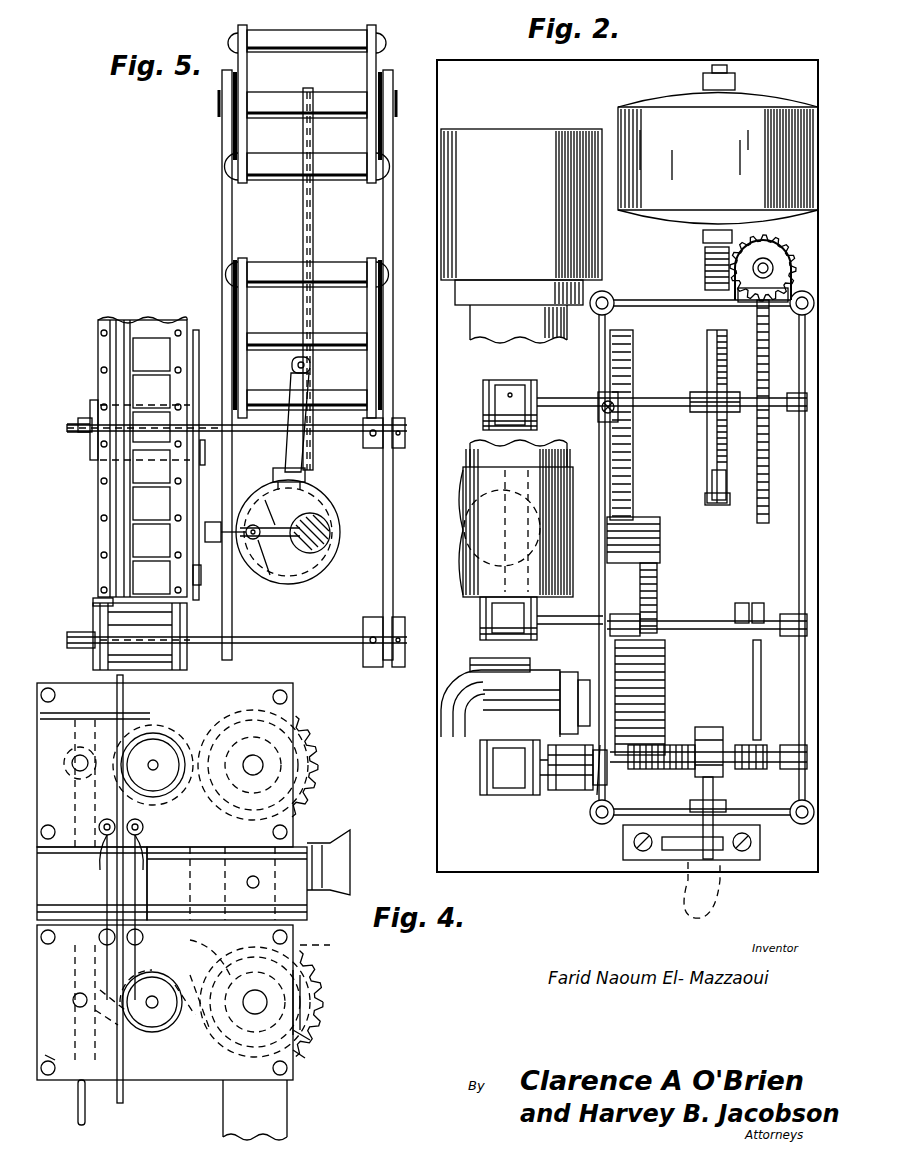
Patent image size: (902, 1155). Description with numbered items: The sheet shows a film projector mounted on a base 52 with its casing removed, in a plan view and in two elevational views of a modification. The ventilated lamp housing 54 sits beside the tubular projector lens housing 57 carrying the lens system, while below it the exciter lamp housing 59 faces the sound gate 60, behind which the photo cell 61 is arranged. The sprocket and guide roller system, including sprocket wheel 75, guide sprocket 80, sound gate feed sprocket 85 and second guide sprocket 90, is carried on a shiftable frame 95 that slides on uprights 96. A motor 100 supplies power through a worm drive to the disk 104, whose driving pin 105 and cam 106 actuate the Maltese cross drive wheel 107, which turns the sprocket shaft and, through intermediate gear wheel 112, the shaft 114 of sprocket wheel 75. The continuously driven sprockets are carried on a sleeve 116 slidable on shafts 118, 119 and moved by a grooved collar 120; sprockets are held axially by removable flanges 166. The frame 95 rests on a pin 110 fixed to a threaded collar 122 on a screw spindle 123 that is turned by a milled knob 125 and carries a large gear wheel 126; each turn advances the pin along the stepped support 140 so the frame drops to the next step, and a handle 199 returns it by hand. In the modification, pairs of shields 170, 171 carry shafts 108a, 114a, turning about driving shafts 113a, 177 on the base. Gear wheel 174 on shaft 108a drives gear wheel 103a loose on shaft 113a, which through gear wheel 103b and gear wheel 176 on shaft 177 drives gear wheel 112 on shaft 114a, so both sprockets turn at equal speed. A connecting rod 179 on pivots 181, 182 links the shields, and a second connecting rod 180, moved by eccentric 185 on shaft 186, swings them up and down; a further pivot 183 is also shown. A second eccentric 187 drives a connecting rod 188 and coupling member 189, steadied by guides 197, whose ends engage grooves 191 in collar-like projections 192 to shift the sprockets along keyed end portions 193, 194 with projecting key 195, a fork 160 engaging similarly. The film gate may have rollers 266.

In FIG. 2, the base 52 is at (507, 865).
In FIG. 2, the lamp housing 54 is at (516, 130).
In FIG. 4, the projector lens housing 57 is at (308, 845).
In FIG. 2, the exciter lamp housing 59 is at (463, 532).
In FIG. 2, the sound gate 60 is at (478, 662).
In FIG. 2, the photo cell 61 is at (451, 737).
In FIG. 2, the sprocket wheel 75 is at (526, 378).
In FIG. 4, the sprocket wheel 75 is at (128, 772).
In FIG. 4, the guide sprocket 80 is at (160, 1035).
In FIG. 5, the sound gate feed sprocket 85 is at (188, 400).
In FIG. 5, the second guide sprocket 90 is at (94, 612).
In FIG. 2, the shiftable frame 95 is at (698, 307).
In FIG. 2, the uprights 96 is at (611, 296).
In FIG. 2, the motor 100 is at (658, 115).
In FIG. 4, the gear wheel 103a is at (318, 988).
In FIG. 4, the gear 103b is at (325, 1010).
In FIG. 4, the disk 104 is at (310, 1046).
In FIG. 2, the driving pin 105 is at (713, 504).
In FIG. 4, the driving pin 105 is at (332, 952).
In FIG. 2, the cam 106 is at (712, 484).
In FIG. 4, the cam 106 is at (318, 1022).
In FIG. 2, the Maltese cross drive wheel 107 is at (707, 442).
In FIG. 4, the Maltese cross drive wheel 107 is at (220, 946).
In FIG. 4, the shaft 108a is at (120, 1040).
In FIG. 2, the pin 110 is at (725, 862).
In FIG. 4, the gear wheel 112 is at (115, 716).
In FIG. 4, the driving shaft 113a is at (255, 1002).
In FIG. 2, the shaft 114 is at (553, 408).
In FIG. 4, the shaft 114a is at (153, 760).
In FIG. 2, the sleeve 116 is at (712, 621).
In FIG. 2, the shaft 118 is at (556, 626).
In FIG. 5, the shaft 118 is at (70, 449).
In FIG. 5, the shaft 119 is at (68, 638).
In FIG. 2, the grooved collar 120 is at (745, 603).
In FIG. 2, the threaded collar 122 is at (715, 727).
In FIG. 2, the screw spindle 123 is at (696, 751).
In FIG. 2, the milled knob 125 is at (568, 778).
In FIG. 2, the large gear wheel 126 is at (597, 797).
In FIG. 2, the stepped support 140 is at (685, 861).
In FIG. 5, the fork 160 is at (95, 660).
In FIG. 5, the removable flanges 166 is at (90, 412).
In FIG. 5, the shields 170 is at (371, 299).
In FIG. 4, the shields 170 is at (236, 1085).
In FIG. 5, the shields 171 is at (376, 156).
In FIG. 4, the shields 171 is at (272, 692).
In FIG. 4, the gear wheel 174 is at (150, 1033).
In FIG. 4, the gear wheel 176 is at (318, 776).
In FIG. 4, the driving shaft 177 is at (253, 755).
In FIG. 5, the connecting rod 179 is at (305, 217).
In FIG. 4, the connecting rod 179 is at (95, 945).
In FIG. 5, the second connecting rod 180 is at (310, 368).
In FIG. 4, the second connecting rod 180 is at (78, 1106).
In FIG. 4, the pivot 181 is at (80, 1001).
In FIG. 4, the pivot 182 is at (85, 752).
In FIG. 4, the pin 183 is at (64, 1046).
In FIG. 5, the eccentric 185 is at (322, 496).
In FIG. 5, the shaft 186 is at (330, 535).
In FIG. 5, the second eccentric 187 is at (268, 542).
In FIG. 5, the connecting rod 188 is at (242, 524).
In FIG. 5, the coupling member 189 is at (200, 600).
In FIG. 5, the grooves 191 is at (198, 420).
In FIG. 5, the collar-like projections 192 is at (205, 462).
In FIG. 5, the end portion 193 is at (78, 440).
In FIG. 5, the end portion 194 is at (74, 641).
In FIG. 5, the projecting key 195 is at (82, 424).
In FIG. 5, the guides 197 is at (210, 524).
In FIG. 2, the handle 199 is at (735, 914).
In FIG. 4, the rollers 266 is at (168, 837).